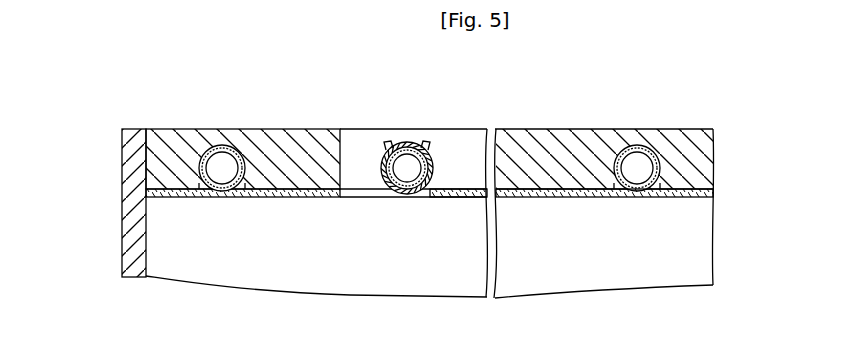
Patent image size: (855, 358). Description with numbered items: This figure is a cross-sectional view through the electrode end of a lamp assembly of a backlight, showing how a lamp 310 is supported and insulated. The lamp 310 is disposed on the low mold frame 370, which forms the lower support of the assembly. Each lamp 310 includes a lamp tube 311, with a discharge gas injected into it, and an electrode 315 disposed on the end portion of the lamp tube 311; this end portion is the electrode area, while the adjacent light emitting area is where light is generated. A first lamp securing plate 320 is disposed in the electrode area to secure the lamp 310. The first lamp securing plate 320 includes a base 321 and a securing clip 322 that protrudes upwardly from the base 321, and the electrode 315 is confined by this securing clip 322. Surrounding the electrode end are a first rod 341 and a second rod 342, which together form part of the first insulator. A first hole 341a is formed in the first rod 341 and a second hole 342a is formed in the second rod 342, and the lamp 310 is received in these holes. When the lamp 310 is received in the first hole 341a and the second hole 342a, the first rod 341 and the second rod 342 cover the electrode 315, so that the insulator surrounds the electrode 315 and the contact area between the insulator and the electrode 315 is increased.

The lamp 310 is at (407, 121).
The lamp tube 311 is at (411, 146).
The electrode 315 is at (440, 79).
The first lamp securing plate 320 is at (316, 123).
The base 321 is at (293, 182).
The securing clip 322 is at (402, 141).
The first rod 341 is at (560, 137).
The first hole 341a is at (665, 183).
The second rod 342 is at (150, 156).
The second hole 342a is at (198, 192).
The low mold frame 370 is at (136, 212).